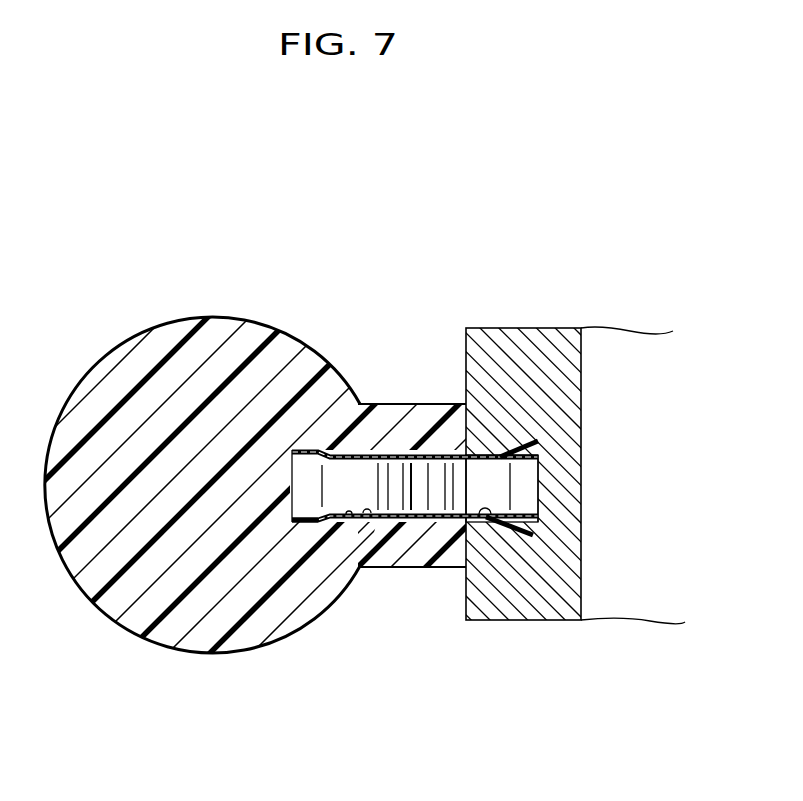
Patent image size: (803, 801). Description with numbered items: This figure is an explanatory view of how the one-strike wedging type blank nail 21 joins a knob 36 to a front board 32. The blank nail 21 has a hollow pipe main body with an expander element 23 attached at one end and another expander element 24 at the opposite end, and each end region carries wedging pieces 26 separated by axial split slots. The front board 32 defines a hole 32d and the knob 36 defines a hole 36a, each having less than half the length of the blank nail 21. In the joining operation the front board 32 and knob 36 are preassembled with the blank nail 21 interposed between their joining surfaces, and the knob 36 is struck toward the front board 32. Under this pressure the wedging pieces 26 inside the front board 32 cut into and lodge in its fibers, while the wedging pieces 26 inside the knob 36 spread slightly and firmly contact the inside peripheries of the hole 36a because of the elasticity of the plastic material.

The knob 36 is at (250, 322).
The hole 36a is at (380, 522).
The one-strike wedging type blank nail 21 is at (398, 440).
The expander element 23 is at (308, 464).
The expander element 24 is at (534, 493).
The wedging pieces 26 is at (540, 444).
The front board 32 is at (480, 328).
The hole 32d is at (494, 522).